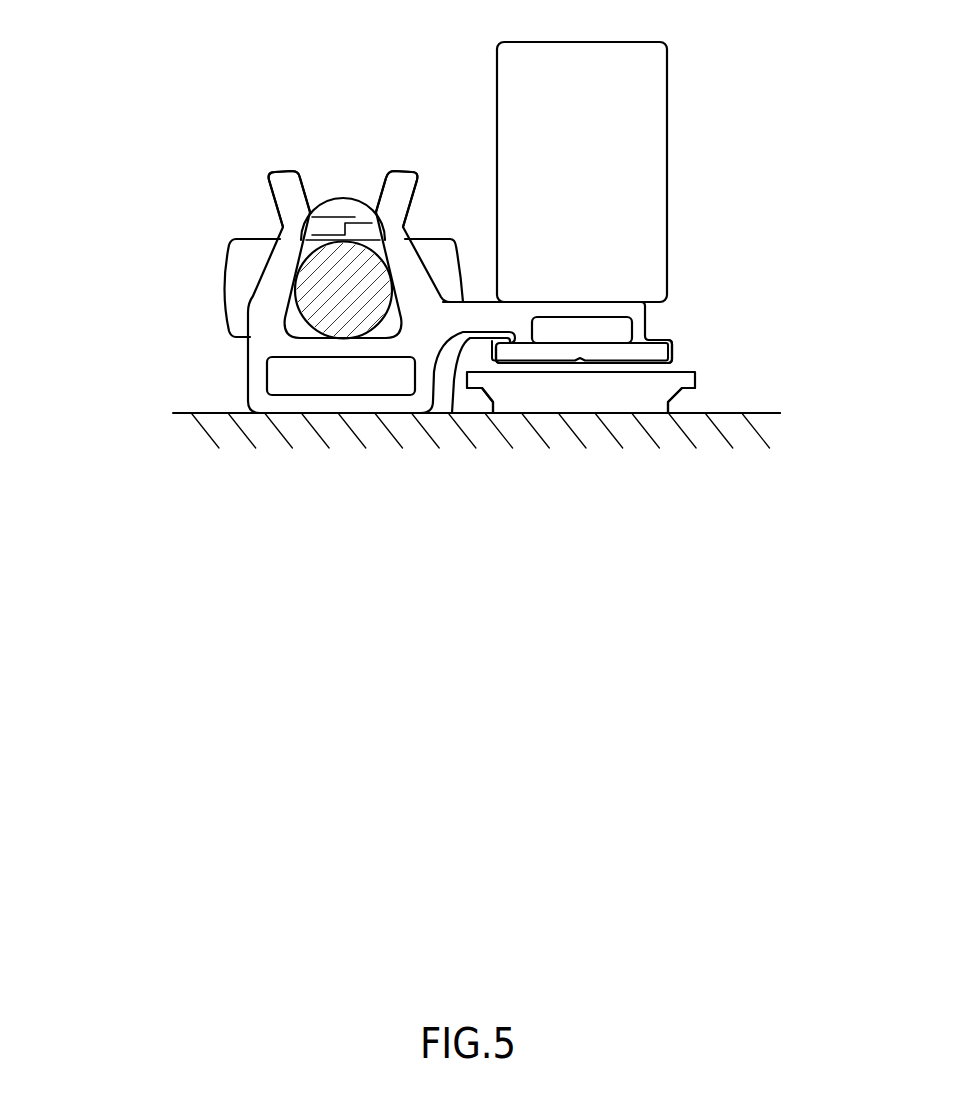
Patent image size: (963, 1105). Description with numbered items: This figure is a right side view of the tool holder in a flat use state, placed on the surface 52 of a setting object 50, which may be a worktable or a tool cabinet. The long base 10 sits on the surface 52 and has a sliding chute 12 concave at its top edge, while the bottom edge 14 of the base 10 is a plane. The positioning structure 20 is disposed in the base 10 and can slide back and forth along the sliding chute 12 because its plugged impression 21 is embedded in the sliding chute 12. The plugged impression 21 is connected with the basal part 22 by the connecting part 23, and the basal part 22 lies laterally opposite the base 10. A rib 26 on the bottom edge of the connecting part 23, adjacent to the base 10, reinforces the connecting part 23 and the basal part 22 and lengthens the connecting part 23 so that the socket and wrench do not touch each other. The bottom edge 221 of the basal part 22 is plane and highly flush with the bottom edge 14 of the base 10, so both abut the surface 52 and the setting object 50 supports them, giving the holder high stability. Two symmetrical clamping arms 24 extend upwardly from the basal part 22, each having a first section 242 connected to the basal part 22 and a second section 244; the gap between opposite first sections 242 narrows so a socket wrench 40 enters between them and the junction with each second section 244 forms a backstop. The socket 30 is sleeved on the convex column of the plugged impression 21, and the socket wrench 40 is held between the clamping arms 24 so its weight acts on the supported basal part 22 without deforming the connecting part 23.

The base 10 is at (647, 350).
The sliding chute 12 is at (607, 363).
The bottom edge 14 is at (685, 422).
The positioning structure 20 is at (376, 292).
The plugged impression 21 is at (657, 352).
The basal part 22 is at (262, 372).
The bottom edge 221 is at (318, 414).
The connecting part 23 is at (477, 308).
The clamping arm 24 is at (245, 254).
The first section 242 is at (268, 290).
The second section 244 is at (282, 191).
The rib 26 is at (443, 395).
The socket 30 is at (643, 70).
The socket wrench 40 is at (335, 260).
The setting object 50 is at (756, 440).
The surface 52 is at (737, 411).